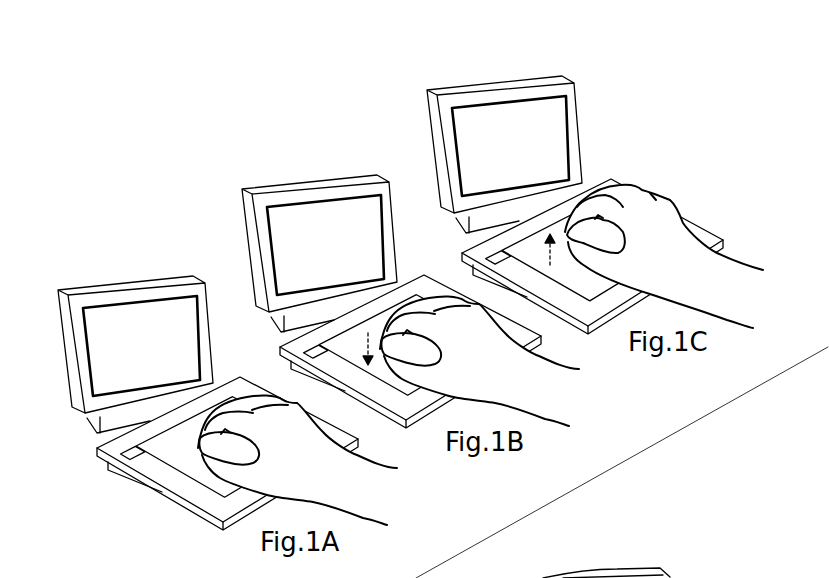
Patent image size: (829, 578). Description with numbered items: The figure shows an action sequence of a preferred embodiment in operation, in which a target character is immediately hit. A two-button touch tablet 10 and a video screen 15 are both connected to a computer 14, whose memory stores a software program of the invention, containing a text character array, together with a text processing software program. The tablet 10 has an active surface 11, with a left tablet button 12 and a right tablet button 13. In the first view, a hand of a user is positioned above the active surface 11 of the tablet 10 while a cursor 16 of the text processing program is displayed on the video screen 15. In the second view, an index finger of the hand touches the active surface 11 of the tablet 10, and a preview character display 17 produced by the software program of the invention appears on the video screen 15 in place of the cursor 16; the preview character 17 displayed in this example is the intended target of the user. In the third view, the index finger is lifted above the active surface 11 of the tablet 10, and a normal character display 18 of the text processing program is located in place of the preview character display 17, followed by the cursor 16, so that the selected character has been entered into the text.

In FIG. 1A, the two-button touch tablet 10 is at (213, 528).
In FIG. 1A, the active surface 11 is at (175, 447).
In FIG. 1A, the left tablet button 12 is at (128, 458).
In FIG. 1A, the right tablet button 13 is at (250, 393).
In FIG. 1A, the computer 14 is at (90, 435).
In FIG. 1A, the video screen 15 is at (100, 380).
In FIG. 1A, the cursor of a text program 16 is at (127, 348).
In FIG. 1B, the preview character display of invention 17 is at (310, 248).
In FIG. 1C, the normal character display of text program 18 is at (500, 150).